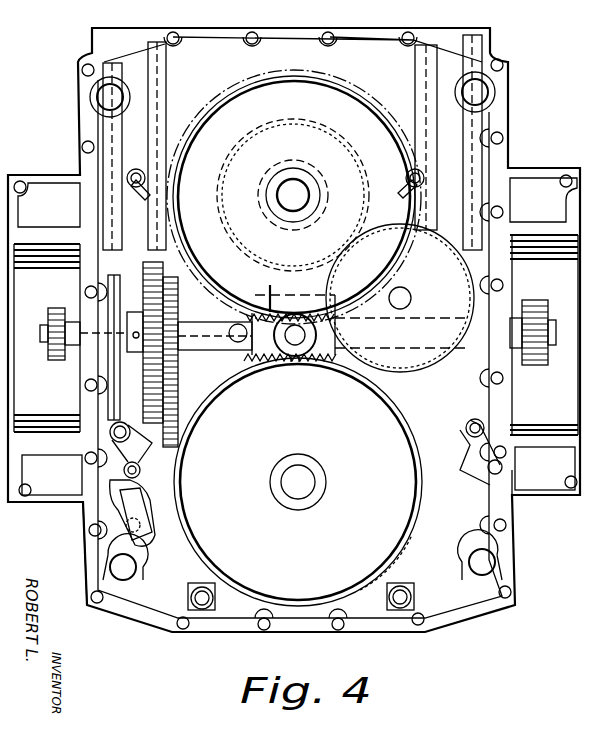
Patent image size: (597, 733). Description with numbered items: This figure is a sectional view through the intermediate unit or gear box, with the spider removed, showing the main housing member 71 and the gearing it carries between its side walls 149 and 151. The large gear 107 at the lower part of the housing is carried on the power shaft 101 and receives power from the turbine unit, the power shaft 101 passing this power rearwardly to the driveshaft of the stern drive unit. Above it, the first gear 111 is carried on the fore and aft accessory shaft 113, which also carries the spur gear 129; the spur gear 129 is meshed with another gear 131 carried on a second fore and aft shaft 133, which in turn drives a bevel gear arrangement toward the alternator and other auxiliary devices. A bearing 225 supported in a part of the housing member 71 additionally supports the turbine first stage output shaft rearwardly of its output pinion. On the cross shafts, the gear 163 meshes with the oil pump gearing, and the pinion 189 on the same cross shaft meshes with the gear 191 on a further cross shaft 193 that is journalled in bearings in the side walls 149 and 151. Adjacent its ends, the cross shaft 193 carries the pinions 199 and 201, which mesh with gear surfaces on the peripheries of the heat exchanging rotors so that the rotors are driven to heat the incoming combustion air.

The housing member 71 is at (510, 128).
The power shaft 101 is at (304, 474).
The gear 107 is at (400, 556).
The first gear 111 is at (268, 294).
The accessory shaft 113 is at (297, 190).
The spur gear 129 is at (250, 253).
The gear 131 is at (418, 355).
The second fore and aft shaft 133 is at (404, 295).
The side wall 149 is at (90, 517).
The side wall 151 is at (500, 491).
The gear 163 is at (185, 428).
The pinion 189 is at (183, 453).
The gear 191 is at (145, 372).
The cross shaft 193 is at (195, 330).
The pinion 199 is at (58, 310).
The pinion 201 is at (538, 312).
The bearing 225 is at (295, 345).